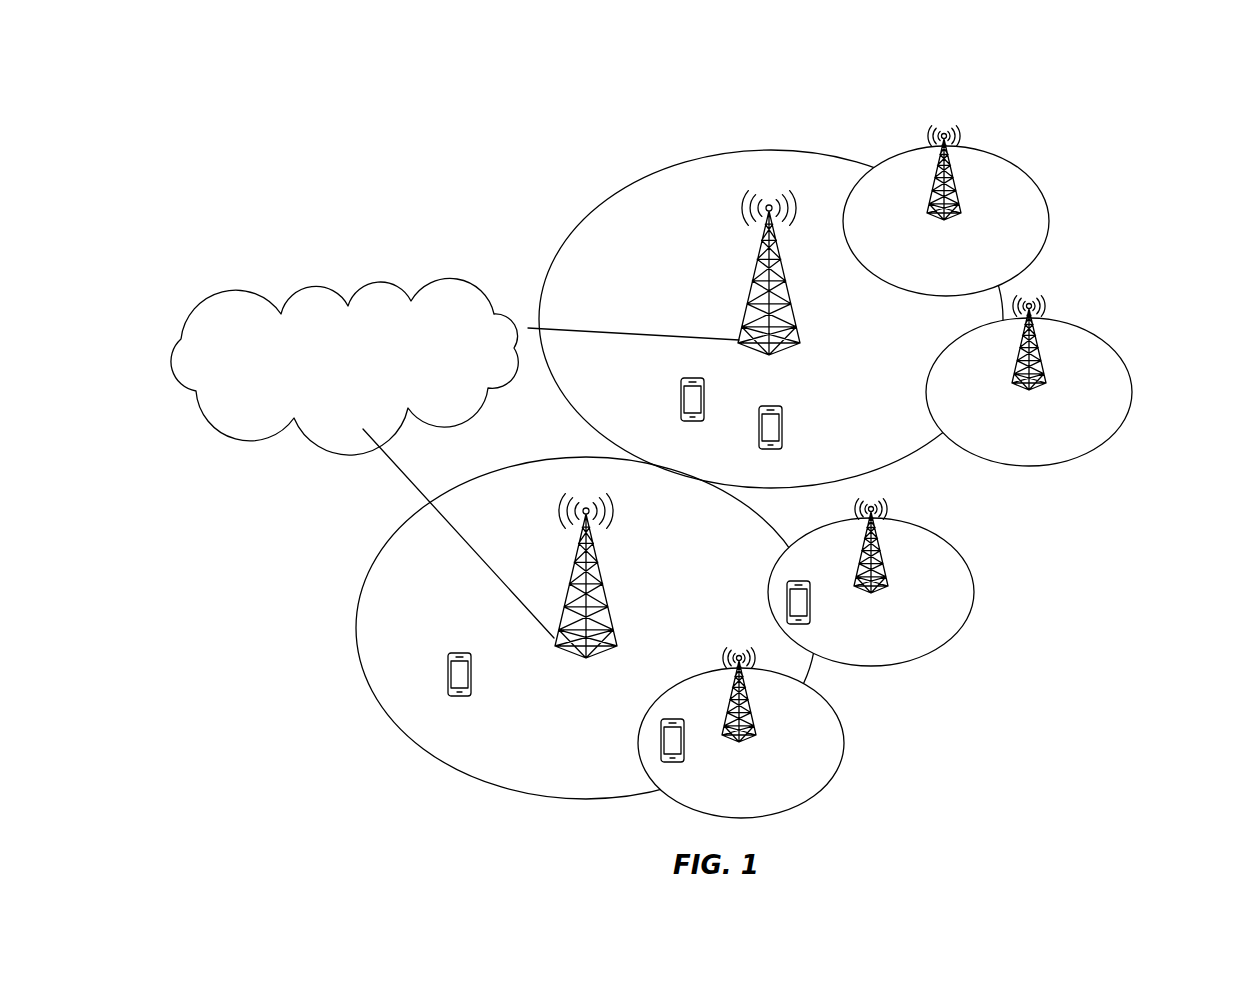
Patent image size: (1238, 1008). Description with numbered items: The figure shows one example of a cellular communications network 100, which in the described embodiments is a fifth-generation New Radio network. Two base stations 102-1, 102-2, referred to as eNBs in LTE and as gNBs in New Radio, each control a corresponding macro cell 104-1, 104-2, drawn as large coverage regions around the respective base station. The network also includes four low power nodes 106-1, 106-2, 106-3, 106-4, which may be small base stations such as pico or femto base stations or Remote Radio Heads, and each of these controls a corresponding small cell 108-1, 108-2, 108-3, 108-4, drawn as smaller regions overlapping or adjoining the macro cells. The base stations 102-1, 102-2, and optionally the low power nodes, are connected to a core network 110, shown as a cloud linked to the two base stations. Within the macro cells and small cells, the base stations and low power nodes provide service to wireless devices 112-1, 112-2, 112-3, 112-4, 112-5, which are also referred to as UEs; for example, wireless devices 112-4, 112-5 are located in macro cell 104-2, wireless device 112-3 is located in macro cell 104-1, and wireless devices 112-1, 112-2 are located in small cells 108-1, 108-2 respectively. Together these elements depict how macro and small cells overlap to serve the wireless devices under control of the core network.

The cellular communications network 100 is at (1121, 110).
The core network 110 is at (327, 400).
The macro cell 104-1 is at (460, 770).
The macro cell 104-2 is at (773, 150).
The base station 102-1 is at (605, 590).
The base station 102-2 is at (785, 292).
The low power node 106-1 is at (757, 720).
The low power node 106-2 is at (885, 573).
The low power node 106-3 is at (1045, 375).
The low power node 106-4 is at (960, 200).
The small cell 108-1 is at (843, 752).
The small cell 108-2 is at (973, 603).
The small cell 108-3 is at (1132, 398).
The small cell 108-4 is at (1048, 210).
The wireless device 112-1 is at (698, 697).
The wireless device 112-2 is at (800, 578).
The wireless device 112-3 is at (470, 672).
The wireless device 112-4 is at (707, 402).
The wireless device 112-5 is at (783, 425).